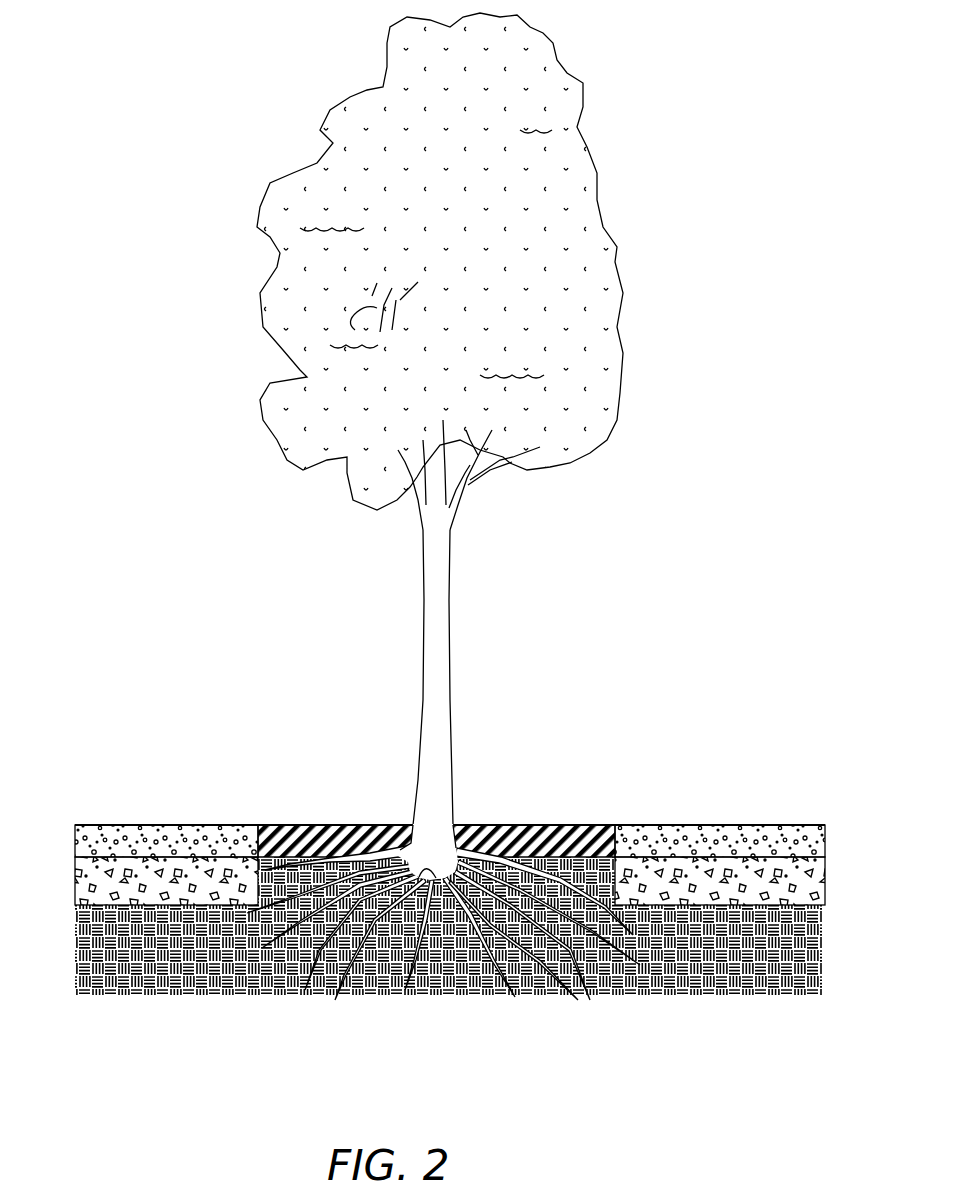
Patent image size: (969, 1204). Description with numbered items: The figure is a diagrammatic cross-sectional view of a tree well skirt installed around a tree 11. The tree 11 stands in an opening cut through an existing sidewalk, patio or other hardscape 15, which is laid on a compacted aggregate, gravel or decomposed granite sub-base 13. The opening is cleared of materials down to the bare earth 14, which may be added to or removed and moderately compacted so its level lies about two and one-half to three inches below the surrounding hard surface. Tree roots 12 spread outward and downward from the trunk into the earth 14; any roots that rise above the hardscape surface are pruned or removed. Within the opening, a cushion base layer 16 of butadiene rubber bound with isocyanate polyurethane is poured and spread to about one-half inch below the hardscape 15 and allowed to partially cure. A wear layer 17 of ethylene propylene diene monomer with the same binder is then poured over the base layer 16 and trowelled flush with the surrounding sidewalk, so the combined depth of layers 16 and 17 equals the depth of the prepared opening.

The tree 11 is at (423, 620).
The tree roots 12 is at (360, 970).
The sub-base 13 is at (203, 867).
The bare earth 14 is at (680, 963).
The hardscape 15 is at (122, 825).
The base layer 16 is at (553, 825).
The wear layer 17 is at (595, 825).